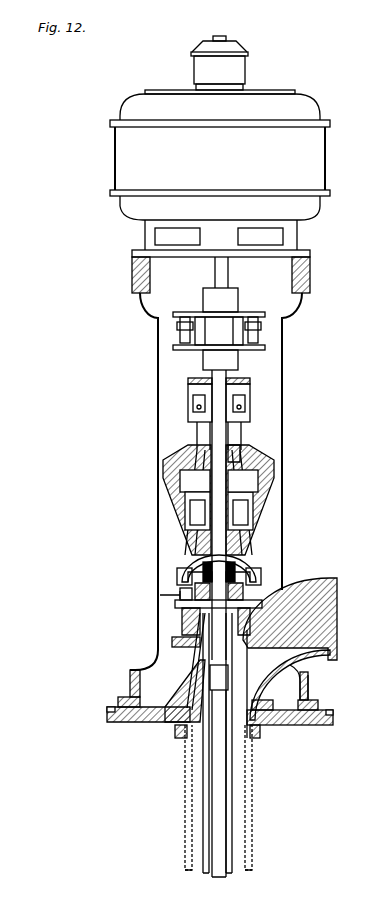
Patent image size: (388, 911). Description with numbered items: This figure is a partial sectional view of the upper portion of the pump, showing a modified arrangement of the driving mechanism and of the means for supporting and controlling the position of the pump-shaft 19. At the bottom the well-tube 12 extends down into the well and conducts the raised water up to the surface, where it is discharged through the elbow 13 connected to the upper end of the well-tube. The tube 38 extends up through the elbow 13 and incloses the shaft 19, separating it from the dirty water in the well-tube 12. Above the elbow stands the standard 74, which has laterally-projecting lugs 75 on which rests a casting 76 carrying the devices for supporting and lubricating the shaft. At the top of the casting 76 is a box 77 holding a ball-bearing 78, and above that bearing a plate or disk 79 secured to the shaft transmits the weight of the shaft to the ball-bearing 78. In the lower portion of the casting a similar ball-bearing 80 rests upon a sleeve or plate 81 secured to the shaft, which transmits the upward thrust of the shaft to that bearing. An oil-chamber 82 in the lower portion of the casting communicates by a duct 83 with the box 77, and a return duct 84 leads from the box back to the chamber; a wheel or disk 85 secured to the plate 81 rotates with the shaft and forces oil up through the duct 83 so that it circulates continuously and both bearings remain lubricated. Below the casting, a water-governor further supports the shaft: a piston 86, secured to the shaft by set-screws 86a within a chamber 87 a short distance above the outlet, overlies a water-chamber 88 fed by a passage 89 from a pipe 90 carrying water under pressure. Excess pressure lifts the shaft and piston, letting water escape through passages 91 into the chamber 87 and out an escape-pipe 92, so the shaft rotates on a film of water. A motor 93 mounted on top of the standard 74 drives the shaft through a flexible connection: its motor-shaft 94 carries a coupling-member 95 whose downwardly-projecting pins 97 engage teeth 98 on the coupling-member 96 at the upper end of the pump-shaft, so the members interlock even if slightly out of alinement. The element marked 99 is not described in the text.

The motor 93 is at (318, 168).
The motor-shaft 94 is at (228, 285).
The coupling-member 95 is at (185, 305).
The coupling-member 96 is at (218, 344).
The pins 97 is at (210, 330).
The teeth 98 is at (182, 330).
The standard 74 is at (273, 368).
The pump-shaft 19 is at (250, 394).
The plate or disk 79 is at (190, 392).
The ball-bearing 78 is at (190, 410).
The box 77 is at (228, 412).
The duct 83 is at (172, 452).
The return duct 84 is at (243, 448).
The casting 76 is at (262, 460).
The lugs 75 is at (180, 483).
The ball-bearing 80 is at (185, 503).
The sleeve or plate 81 is at (190, 512).
The oil-chamber 82 is at (250, 515).
The wheel or disk 85 is at (251, 505).
The set-screws 86a is at (208, 562).
The chamber 87 is at (250, 556).
The piston 86 is at (255, 566).
The escape-pipe 92 is at (265, 592).
The passages 91 is at (178, 575).
The pipe 90 is at (158, 595).
The passage 89 is at (206, 600).
The water-chamber 88 is at (243, 604).
The elbow 13 is at (325, 610).
The bracket 99 is at (190, 648).
The tube 38 is at (205, 790).
The well-tube 12 is at (250, 802).